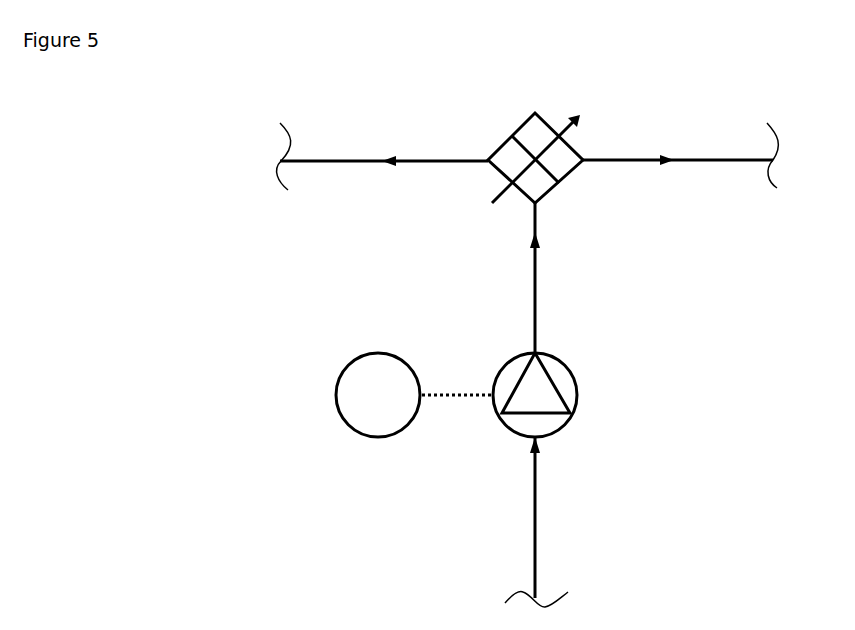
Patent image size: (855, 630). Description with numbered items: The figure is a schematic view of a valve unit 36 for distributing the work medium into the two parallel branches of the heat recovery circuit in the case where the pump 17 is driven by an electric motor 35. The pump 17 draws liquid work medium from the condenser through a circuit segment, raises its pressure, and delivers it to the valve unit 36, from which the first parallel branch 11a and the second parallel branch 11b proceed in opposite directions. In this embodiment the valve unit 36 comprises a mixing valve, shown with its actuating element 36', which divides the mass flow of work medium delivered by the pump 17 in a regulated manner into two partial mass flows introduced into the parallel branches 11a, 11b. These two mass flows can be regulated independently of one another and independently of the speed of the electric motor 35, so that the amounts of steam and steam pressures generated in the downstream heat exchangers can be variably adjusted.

The first parallel branch 11a is at (323, 162).
The second parallel branch 11b is at (720, 159).
The pump 17 is at (547, 422).
The electric motor 35 is at (377, 423).
The valve unit 36 is at (531, 128).
The valve actuator 36' is at (553, 181).